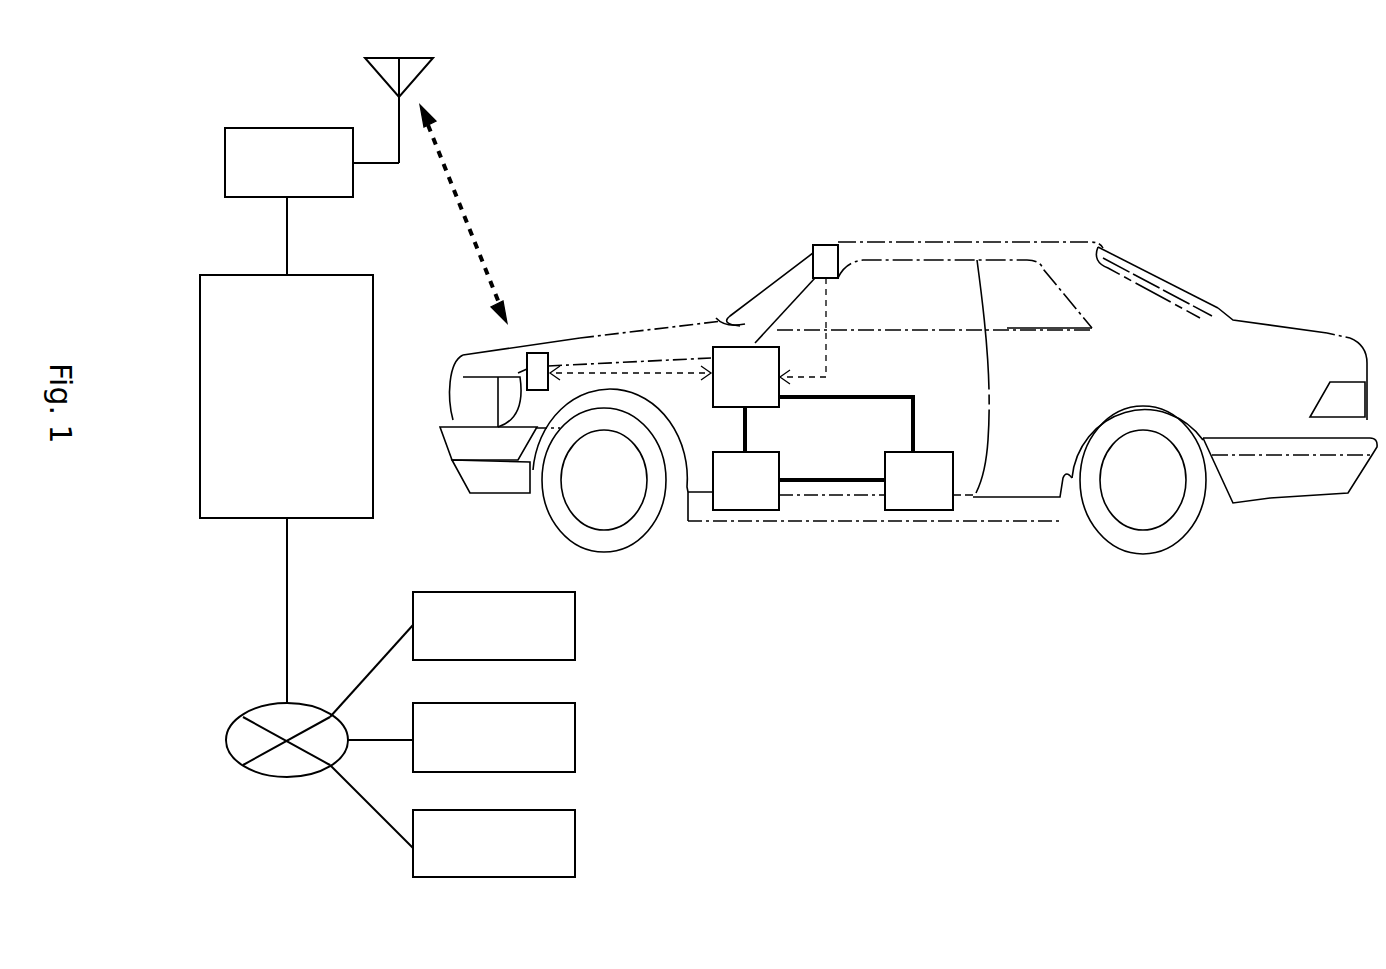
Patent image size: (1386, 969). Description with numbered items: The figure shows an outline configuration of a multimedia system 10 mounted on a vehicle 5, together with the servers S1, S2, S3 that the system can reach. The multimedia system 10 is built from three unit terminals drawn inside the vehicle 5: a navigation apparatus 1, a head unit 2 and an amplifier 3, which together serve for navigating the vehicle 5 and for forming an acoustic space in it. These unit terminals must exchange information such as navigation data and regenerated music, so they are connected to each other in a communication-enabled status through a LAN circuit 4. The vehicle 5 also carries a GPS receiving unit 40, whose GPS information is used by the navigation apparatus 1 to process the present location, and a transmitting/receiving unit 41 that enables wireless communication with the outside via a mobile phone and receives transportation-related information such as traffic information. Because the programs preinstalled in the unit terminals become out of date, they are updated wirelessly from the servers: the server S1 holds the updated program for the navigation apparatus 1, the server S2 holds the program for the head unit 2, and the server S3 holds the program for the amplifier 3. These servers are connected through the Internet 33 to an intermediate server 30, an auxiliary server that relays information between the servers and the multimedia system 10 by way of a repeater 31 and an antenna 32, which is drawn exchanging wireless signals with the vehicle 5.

The navigation apparatus 1 is at (745, 347).
The head unit 2 is at (735, 510).
The amplifier 3 is at (918, 510).
The LAN circuit 4 is at (867, 393).
The vehicle 5 is at (1263, 490).
The multimedia system 10 is at (833, 622).
The intermediate server 30 is at (330, 275).
The repeater 31 is at (292, 128).
The antenna 32 is at (366, 57).
The Internet 33 is at (287, 777).
The GPS receiving unit 40 is at (825, 245).
The transmitting/receiving unit 41 is at (538, 353).
The server S1 is at (453, 592).
The server S2 is at (453, 703).
The server S3 is at (453, 810).